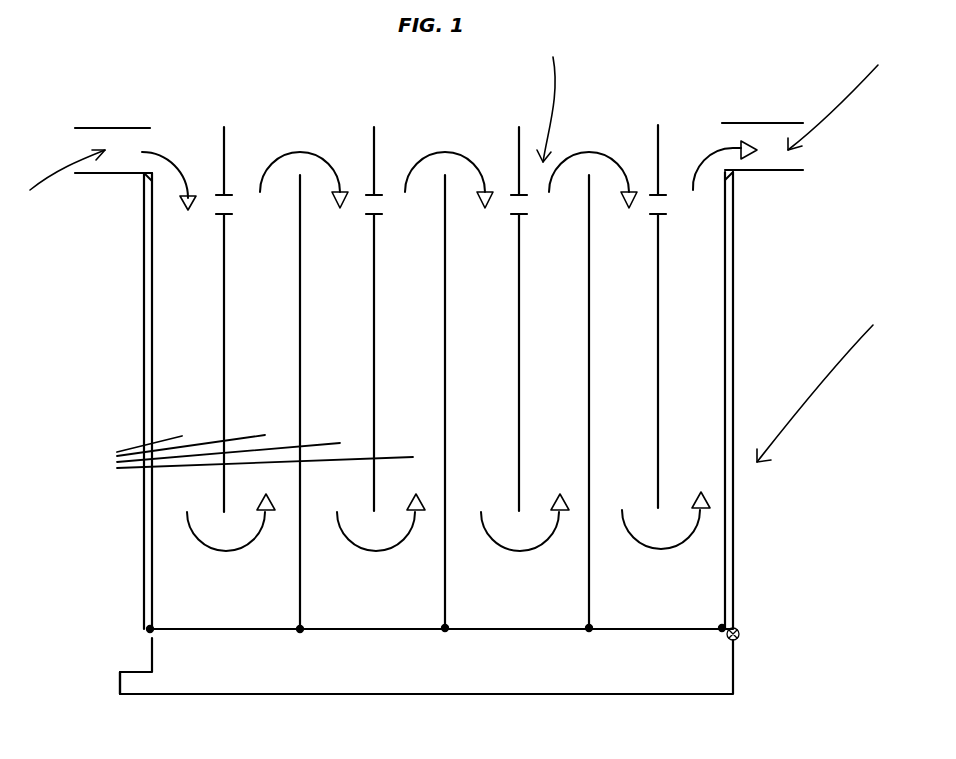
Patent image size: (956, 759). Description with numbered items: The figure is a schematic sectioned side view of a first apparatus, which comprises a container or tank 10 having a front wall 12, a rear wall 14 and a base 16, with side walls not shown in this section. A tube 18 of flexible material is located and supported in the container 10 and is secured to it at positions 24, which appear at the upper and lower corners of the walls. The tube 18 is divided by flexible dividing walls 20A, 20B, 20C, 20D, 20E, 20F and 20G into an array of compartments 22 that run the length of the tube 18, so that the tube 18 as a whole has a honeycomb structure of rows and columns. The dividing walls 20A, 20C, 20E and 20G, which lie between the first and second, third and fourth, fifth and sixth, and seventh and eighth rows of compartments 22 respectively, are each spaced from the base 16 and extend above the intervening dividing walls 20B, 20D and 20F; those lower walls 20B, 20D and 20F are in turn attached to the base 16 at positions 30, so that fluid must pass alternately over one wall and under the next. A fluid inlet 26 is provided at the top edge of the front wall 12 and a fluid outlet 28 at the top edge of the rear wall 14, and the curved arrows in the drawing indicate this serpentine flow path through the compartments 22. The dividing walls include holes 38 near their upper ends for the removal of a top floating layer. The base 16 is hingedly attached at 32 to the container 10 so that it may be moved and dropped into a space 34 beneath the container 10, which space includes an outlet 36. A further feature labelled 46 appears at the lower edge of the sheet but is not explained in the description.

The container 10 is at (824, 381).
The front wall 12 is at (143, 368).
The rear wall 14 is at (735, 377).
The base 16 is at (525, 633).
The tube 18 is at (552, 98).
The dividing wall 20A is at (227, 142).
The dividing wall 20B is at (290, 195).
The dividing wall 20C is at (376, 138).
The dividing wall 20D is at (443, 190).
The dividing wall 20E is at (517, 143).
The dividing wall 20F is at (580, 190).
The dividing wall 20G is at (658, 137).
The compartments 22 is at (239, 454).
The positions 24 is at (135, 190).
The fluid inlet 26 is at (56, 184).
The fluid outlet 28 is at (837, 94).
The positions 30 is at (303, 633).
The hinge 32 is at (748, 640).
The space 34 is at (573, 675).
The outlet 36 is at (138, 687).
The holes 38 is at (215, 207).
The support 46 is at (507, 753).